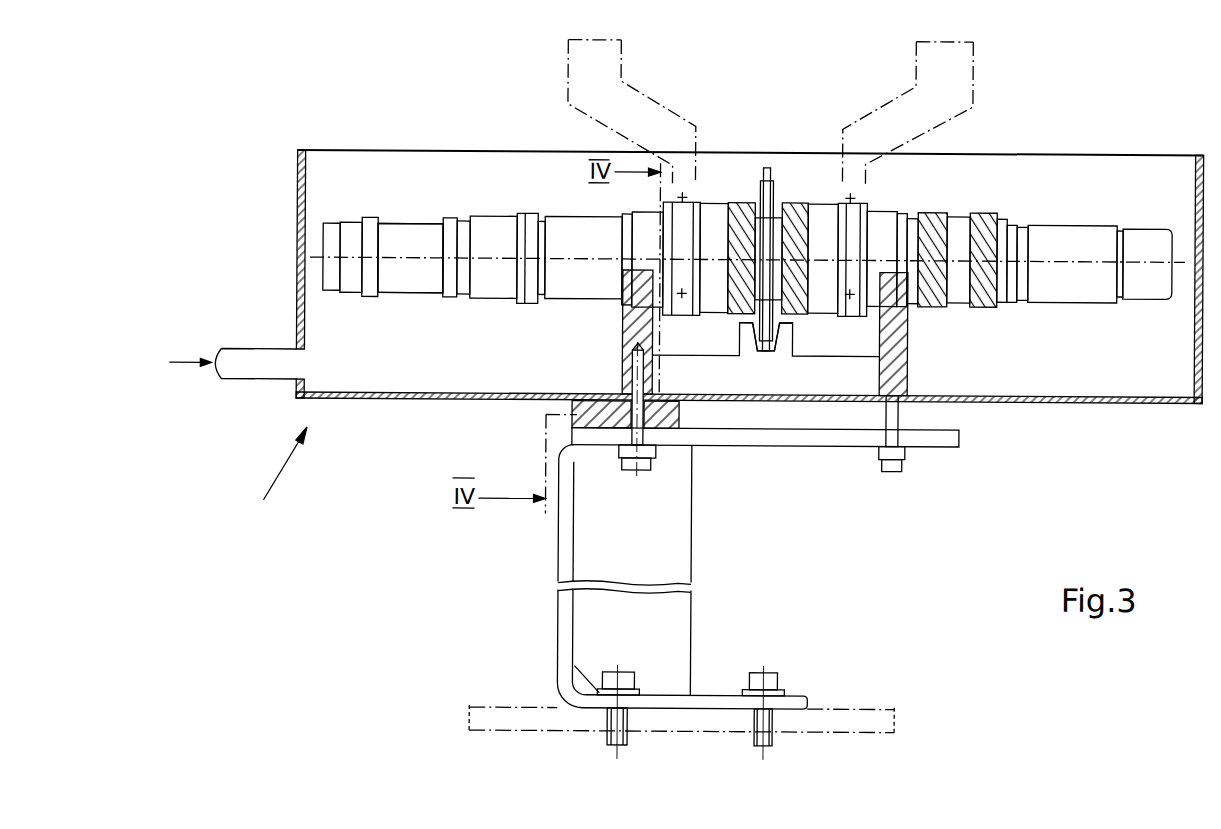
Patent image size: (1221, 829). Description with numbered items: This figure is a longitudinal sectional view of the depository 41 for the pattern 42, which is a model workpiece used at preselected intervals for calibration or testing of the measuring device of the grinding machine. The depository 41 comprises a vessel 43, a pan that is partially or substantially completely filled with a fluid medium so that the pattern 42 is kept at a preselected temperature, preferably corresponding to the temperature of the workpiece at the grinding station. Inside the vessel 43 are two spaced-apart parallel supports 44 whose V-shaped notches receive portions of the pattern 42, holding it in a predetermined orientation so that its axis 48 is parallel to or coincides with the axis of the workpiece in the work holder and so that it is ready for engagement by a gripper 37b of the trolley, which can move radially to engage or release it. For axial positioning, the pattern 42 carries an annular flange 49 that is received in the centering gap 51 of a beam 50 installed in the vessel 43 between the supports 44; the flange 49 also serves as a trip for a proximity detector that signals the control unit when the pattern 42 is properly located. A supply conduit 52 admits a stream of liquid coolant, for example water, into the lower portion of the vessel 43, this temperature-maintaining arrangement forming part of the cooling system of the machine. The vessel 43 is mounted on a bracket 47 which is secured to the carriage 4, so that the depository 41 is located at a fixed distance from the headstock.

The carriage 4 is at (515, 704).
The gripper 37b is at (620, 64).
The depository 41 is at (277, 480).
The pattern 42 is at (1062, 228).
The vessel 43 is at (1023, 401).
The supports 44 is at (647, 326).
The bracket 47 is at (562, 547).
The axis 48 is at (485, 255).
The annular flange 49 is at (773, 165).
The beam 50 is at (843, 380).
The centering gap 51 is at (770, 355).
The supply conduit 52 is at (240, 352).